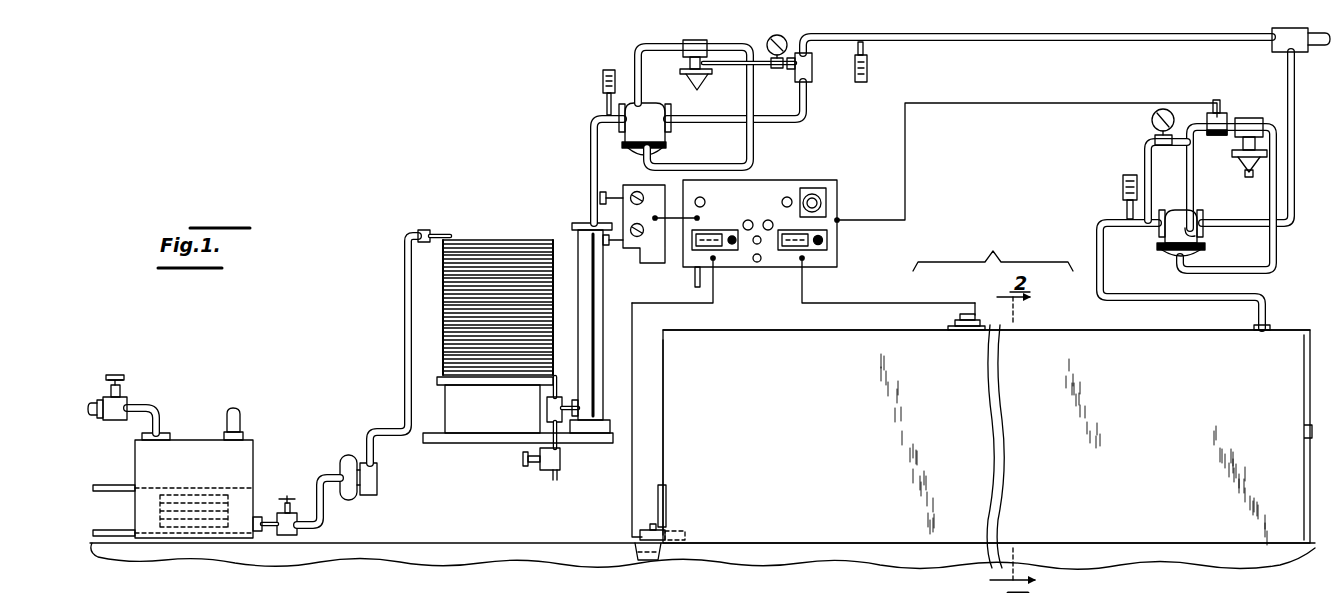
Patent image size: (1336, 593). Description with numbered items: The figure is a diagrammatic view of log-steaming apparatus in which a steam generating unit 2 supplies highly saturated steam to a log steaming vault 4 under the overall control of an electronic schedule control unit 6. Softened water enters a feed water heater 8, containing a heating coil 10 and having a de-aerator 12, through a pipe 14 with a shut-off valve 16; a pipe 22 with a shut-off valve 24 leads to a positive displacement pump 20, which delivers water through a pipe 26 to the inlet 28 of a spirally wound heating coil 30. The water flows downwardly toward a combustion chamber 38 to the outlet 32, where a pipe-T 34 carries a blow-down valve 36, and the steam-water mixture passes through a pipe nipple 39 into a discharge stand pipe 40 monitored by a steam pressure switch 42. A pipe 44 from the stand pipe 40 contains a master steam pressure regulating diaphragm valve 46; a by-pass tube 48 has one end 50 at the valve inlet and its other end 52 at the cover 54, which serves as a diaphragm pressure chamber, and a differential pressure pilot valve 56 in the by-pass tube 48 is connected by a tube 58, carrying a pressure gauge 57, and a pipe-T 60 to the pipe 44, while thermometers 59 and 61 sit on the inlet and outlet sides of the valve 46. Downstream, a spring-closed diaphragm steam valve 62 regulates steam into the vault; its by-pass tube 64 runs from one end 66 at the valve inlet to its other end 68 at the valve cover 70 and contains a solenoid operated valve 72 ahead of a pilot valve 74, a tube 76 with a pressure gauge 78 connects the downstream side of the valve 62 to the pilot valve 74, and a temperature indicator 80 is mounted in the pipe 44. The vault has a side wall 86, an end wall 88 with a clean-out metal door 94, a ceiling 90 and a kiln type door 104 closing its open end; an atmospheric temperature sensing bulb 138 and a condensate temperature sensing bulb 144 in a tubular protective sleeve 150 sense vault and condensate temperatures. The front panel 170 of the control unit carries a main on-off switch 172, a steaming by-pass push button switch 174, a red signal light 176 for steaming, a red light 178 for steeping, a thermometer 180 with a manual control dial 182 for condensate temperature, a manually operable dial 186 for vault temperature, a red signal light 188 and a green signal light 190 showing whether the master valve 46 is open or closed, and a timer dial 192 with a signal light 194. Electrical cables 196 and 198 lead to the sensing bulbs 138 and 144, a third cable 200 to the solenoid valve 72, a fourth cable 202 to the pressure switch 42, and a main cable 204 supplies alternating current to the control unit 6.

The steam generating unit 2 is at (402, 275).
The log steaming vault 4 is at (1040, 350).
The electronic schedule control unit 6 is at (765, 178).
The feed water heater 8 is at (190, 437).
The heating coil 10 is at (205, 490).
The de-aerator 12 is at (237, 407).
The pipe 14 is at (153, 407).
The shut-off valve 16 is at (119, 373).
The positive displacement pump 20 is at (376, 482).
The pipe 22 is at (333, 478).
The shut-off valve 24 is at (285, 498).
The pipe 26 is at (404, 378).
The inlet 28 is at (423, 228).
The heating coil 30 is at (510, 238).
The outlet 32 is at (540, 390).
The pipe-T 34 is at (546, 410).
The blow-down valve 36 is at (530, 468).
The combustion chamber 38 is at (465, 445).
The pipe nipple 39 is at (566, 420).
The discharge stand pipe 40 is at (578, 252).
The steam pressure switch 42 is at (650, 194).
The pipe 44 is at (590, 165).
The master steam pressure regulating diaphragm valve 46 is at (652, 108).
The by-pass tube 48 is at (638, 62).
The end 50 is at (628, 143).
The end 52 is at (660, 168).
The cover 54 is at (668, 147).
The differential pressure pilot valve 56 is at (688, 44).
The pressure gauge 57 is at (768, 42).
The tube 58 is at (745, 66).
The thermometer 59 is at (603, 80).
The pipe-T 60 is at (812, 66).
The thermometer 61 is at (864, 85).
The steam valve 62 is at (1178, 212).
The by-pass tube 64 is at (1278, 272).
The end 66 is at (1200, 243).
The end 68 is at (1178, 266).
The valve cover 70 is at (1160, 250).
The solenoid operated valve 72 is at (1216, 100).
The pilot valve 74 is at (1250, 118).
The tube 76 is at (1148, 150).
The pressure gauge 78 is at (1152, 122).
The temperature indicator 80 is at (1122, 180).
The side wall 86 is at (985, 418).
The end wall 88 is at (663, 380).
The ceiling 90 is at (793, 330).
The metal door 94 is at (658, 485).
The kiln type door 104 is at (1318, 326).
The atmospheric temperature sensing bulb 138 is at (975, 372).
The condensate temperature sensing bulb 144 is at (672, 527).
The tubular protective sleeve 150 is at (656, 555).
The front panel 170 is at (838, 229).
The main on-off switch 172 is at (800, 275).
The steaming by-pass push button switch 174 is at (717, 280).
The red signal light 176 is at (715, 180).
The red light 178 is at (787, 197).
The thermometer 180 is at (704, 230).
The manual control dial 182 is at (732, 248).
The manually operable dial 186 is at (823, 243).
The red signal light 188 is at (708, 188).
The green signal light 190 is at (768, 220).
The timer dial 192 is at (813, 194).
The signal light 194 is at (826, 206).
The electrical cable 196 is at (964, 319).
The electrical cable 198 is at (632, 312).
The cable 200 is at (922, 103).
The cable 202 is at (668, 248).
The main cable 204 is at (695, 280).